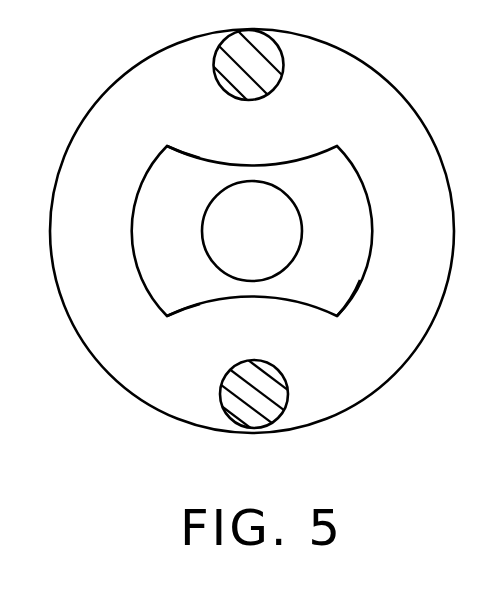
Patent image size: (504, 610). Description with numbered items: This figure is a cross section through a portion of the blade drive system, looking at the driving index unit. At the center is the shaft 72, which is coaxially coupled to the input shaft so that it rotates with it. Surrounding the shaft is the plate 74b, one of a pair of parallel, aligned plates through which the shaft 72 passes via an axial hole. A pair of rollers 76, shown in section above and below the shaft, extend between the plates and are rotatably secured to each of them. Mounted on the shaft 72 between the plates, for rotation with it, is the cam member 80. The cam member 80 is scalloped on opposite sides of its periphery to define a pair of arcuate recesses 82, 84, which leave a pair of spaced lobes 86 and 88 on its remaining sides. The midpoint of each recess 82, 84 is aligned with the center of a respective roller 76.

The shaft 72 is at (260, 232).
The plate 74b is at (414, 233).
The rollers 76 is at (247, 400).
The cam member 80 is at (325, 283).
The arcuate recess 82 is at (313, 153).
The arcuate recess 84 is at (190, 310).
The lobe 86 is at (153, 157).
The lobe 88 is at (355, 297).